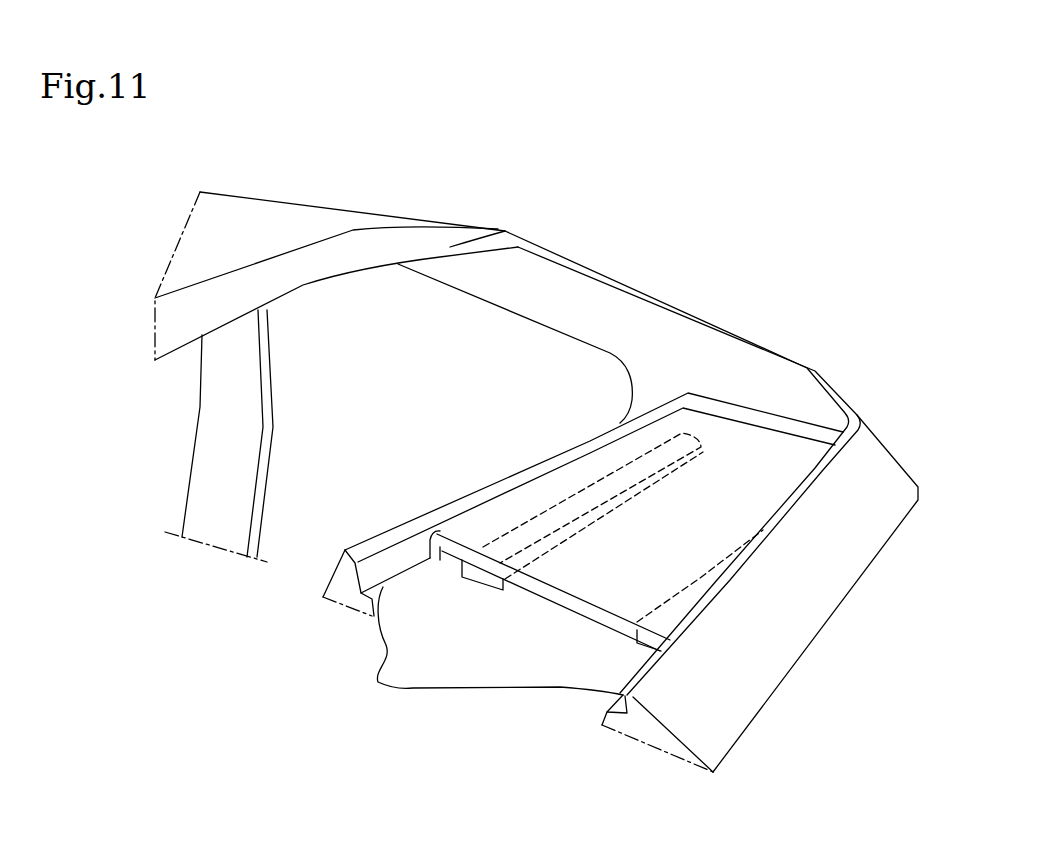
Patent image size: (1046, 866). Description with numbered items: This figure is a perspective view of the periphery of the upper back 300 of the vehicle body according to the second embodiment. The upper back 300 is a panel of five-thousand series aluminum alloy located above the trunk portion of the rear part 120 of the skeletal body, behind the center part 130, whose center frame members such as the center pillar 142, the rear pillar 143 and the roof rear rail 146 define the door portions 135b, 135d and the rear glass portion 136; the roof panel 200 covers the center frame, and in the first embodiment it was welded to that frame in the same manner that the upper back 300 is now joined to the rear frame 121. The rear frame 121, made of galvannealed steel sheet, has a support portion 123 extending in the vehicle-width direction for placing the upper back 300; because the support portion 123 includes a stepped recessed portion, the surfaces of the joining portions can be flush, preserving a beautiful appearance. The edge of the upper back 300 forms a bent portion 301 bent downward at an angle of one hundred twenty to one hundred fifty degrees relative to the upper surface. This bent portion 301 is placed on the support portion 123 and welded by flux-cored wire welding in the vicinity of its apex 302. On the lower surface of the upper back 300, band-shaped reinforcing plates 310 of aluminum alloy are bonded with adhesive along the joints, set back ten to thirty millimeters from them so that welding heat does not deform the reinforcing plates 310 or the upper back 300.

The rear part 120 is at (803, 258).
The rear frame 121 is at (808, 578).
The support portion 123 is at (473, 633).
The center part 130 is at (370, 192).
The door portion 135b is at (170, 419).
The door portion 135d is at (415, 423).
The rear glass portion 136 is at (678, 360).
The center pillar 142 is at (233, 357).
The rear pillar 143 is at (590, 317).
The roof rear rail 146 is at (507, 231).
The roof panel 200 is at (237, 220).
The upper back 300 is at (687, 533).
The bent portion 301 is at (443, 560).
The apex 302 is at (432, 532).
The reinforcing plate 310 is at (493, 582).